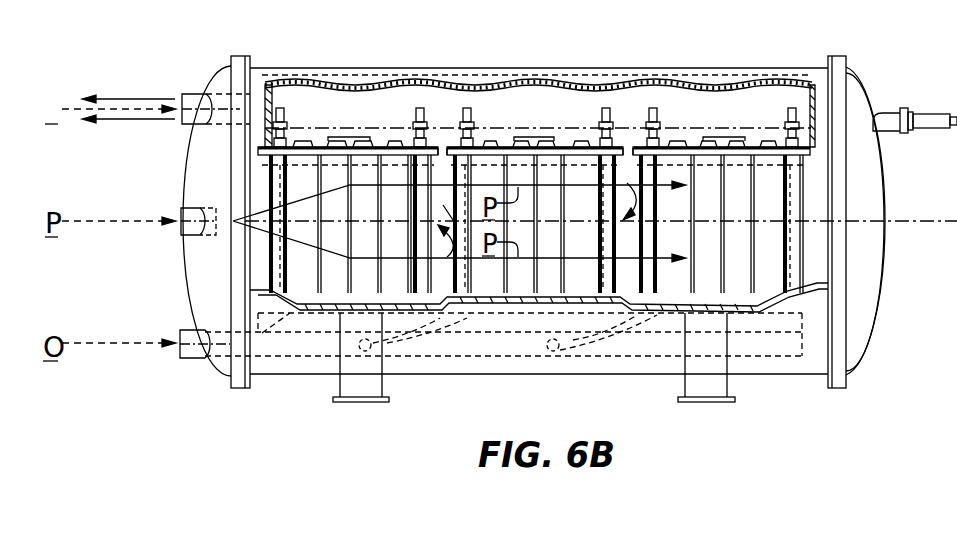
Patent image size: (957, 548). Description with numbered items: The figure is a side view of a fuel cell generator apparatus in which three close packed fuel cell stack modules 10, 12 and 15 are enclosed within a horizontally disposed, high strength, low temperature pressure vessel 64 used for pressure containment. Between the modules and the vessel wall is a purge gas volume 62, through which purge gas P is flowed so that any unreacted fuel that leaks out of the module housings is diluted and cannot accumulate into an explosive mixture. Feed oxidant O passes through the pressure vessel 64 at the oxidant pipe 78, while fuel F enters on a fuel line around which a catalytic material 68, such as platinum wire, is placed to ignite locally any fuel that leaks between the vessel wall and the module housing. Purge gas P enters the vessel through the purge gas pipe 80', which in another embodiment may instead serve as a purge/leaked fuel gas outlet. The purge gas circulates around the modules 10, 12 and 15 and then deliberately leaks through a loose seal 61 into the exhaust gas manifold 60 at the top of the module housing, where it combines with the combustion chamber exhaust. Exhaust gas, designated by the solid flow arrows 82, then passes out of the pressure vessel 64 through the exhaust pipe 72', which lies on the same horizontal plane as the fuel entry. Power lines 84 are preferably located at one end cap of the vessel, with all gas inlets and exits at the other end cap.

The fuel cell stack module 10 is at (294, 143).
The fuel cell stack module 12 is at (510, 140).
The fuel cell stack module 15 is at (720, 128).
The exhaust gas manifold 60 is at (297, 61).
The loose seal 61 is at (807, 157).
The purge gas volume 62 is at (628, 168).
The pressure vessel 64 is at (353, 68).
The catalytic material 68 is at (253, 110).
The exhaust pipe 72' is at (186, 66).
The oxidant pipe 78 is at (190, 360).
The purge gas pipe 80' is at (177, 255).
The exhaust gas flow arrows 82 is at (143, 97).
The power lines 84 is at (934, 118).